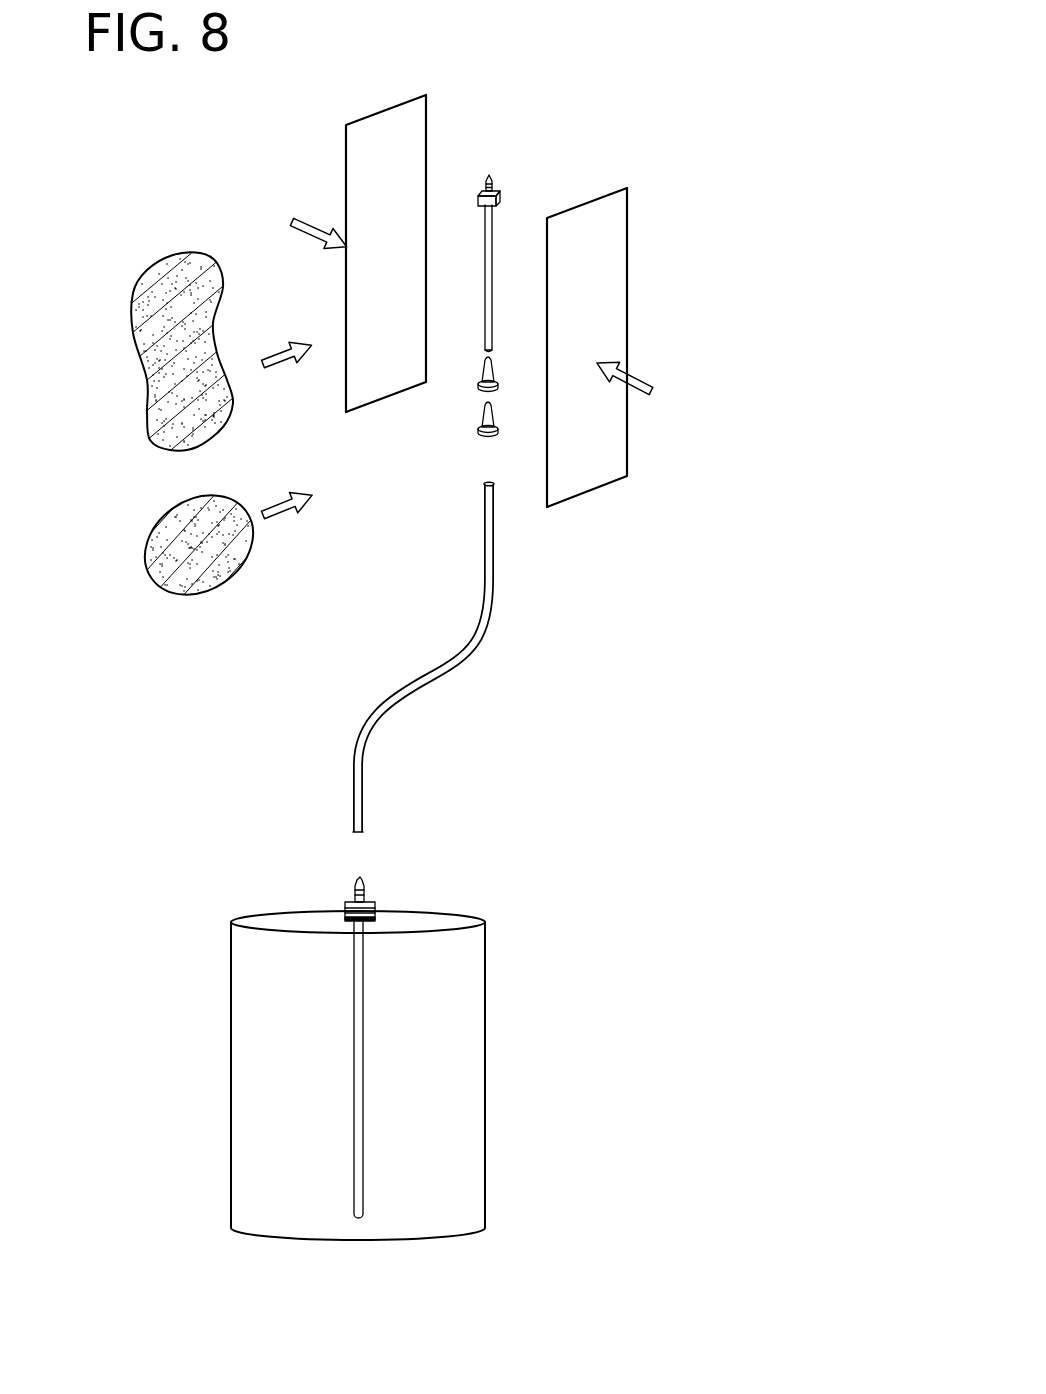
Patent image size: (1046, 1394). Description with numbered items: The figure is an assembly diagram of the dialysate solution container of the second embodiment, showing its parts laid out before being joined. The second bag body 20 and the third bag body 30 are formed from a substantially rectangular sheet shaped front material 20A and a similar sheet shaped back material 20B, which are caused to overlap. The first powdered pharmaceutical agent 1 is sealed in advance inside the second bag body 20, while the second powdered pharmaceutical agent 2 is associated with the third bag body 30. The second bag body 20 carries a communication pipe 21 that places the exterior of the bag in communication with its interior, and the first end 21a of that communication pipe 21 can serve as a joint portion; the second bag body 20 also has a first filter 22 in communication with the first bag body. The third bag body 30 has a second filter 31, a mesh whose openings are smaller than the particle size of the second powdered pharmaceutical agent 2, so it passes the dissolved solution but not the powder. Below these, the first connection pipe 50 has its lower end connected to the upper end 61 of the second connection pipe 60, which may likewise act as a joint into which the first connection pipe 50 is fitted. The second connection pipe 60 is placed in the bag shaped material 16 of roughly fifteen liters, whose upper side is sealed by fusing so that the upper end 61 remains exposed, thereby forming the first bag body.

The first powdered pharmaceutical agent 1 is at (163, 257).
The second powdered pharmaceutical agent 2 is at (148, 563).
The bag shaped material 16 is at (393, 1048).
The second bag body 20 is at (534, 300).
The third bag body 30 is at (534, 300).
The front material 20A is at (622, 210).
The back material 20B is at (346, 143).
The communication pipe 21 is at (533, 222).
The first end of the communicating pipe 21a is at (490, 172).
The first filter 22 is at (495, 368).
The second filter 31 is at (497, 408).
The first connection pipe 50 is at (497, 575).
The second connection pipe 60 is at (375, 1037).
The upper end of the second connection pipe 61 is at (355, 886).